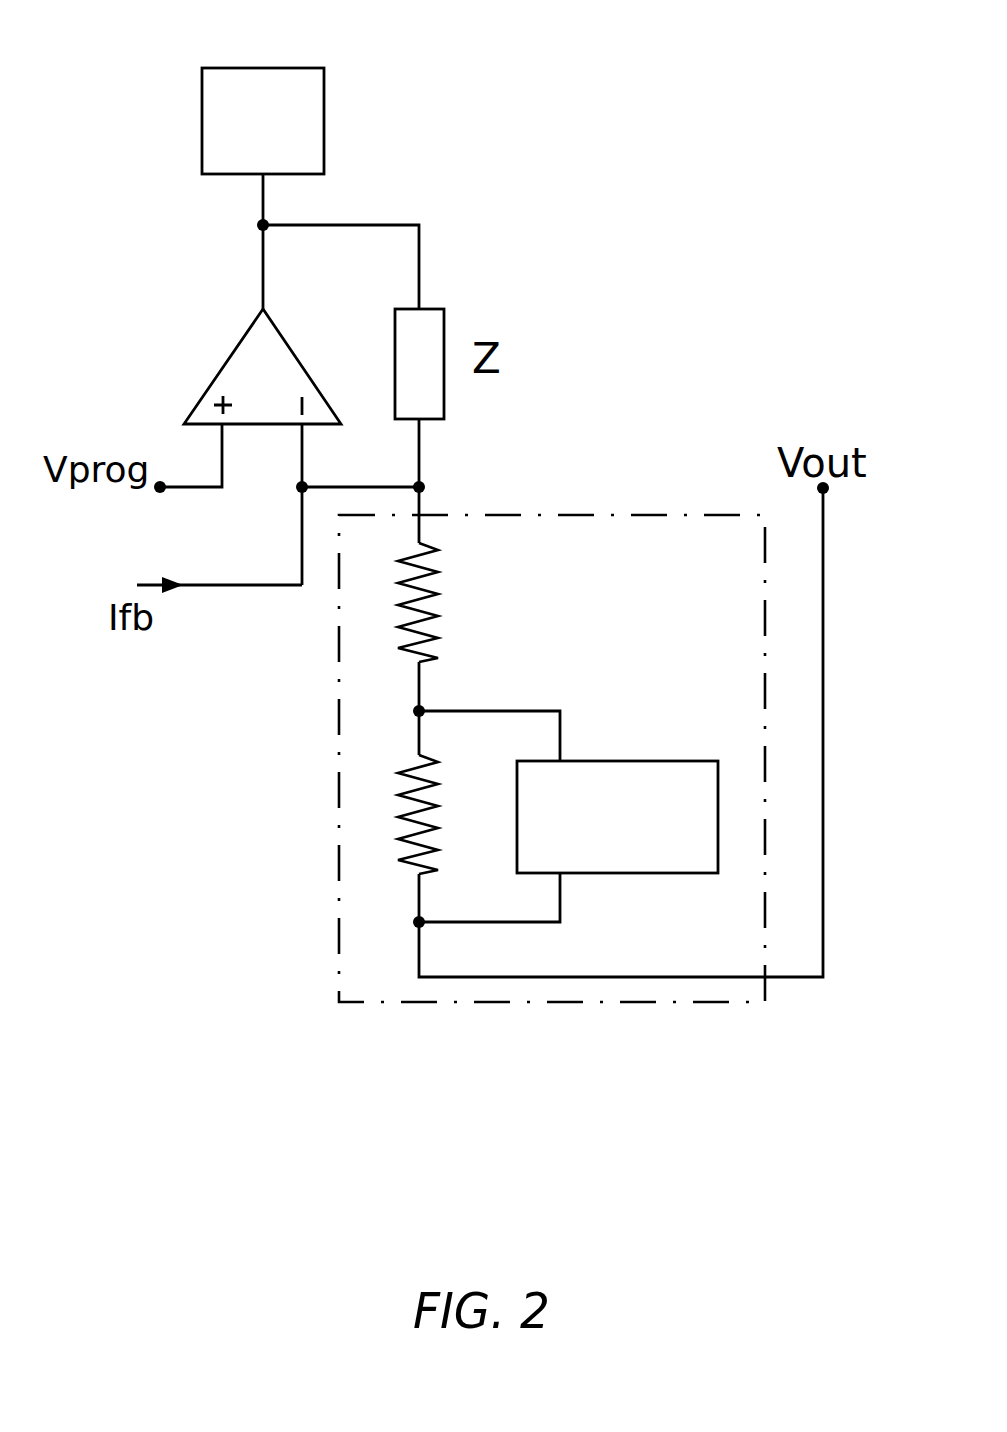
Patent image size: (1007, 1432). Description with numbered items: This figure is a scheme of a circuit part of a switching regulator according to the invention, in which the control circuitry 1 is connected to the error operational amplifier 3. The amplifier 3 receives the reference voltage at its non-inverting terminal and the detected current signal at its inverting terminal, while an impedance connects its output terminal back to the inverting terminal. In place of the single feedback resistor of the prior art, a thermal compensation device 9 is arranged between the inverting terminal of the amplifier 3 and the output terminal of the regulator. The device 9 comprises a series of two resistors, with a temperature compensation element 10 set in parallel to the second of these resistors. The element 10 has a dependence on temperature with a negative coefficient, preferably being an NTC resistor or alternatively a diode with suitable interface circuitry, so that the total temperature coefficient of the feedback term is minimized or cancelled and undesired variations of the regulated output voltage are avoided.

The control circuitry 1 is at (306, 66).
The error operational amplifier 3 is at (252, 369).
The thermal compensation device 9 is at (608, 515).
The temperature compensation element 10 is at (630, 760).